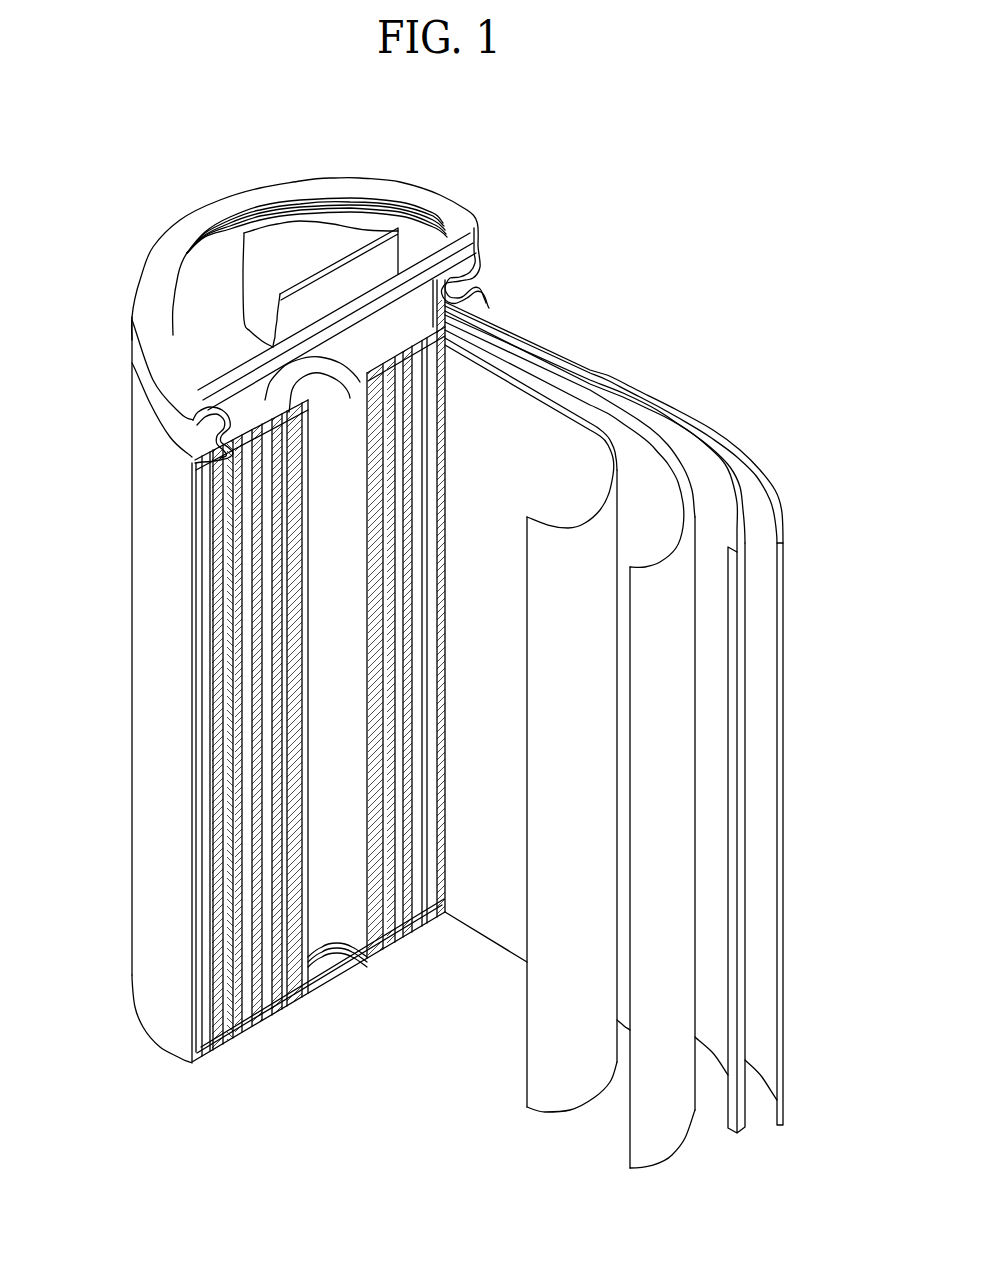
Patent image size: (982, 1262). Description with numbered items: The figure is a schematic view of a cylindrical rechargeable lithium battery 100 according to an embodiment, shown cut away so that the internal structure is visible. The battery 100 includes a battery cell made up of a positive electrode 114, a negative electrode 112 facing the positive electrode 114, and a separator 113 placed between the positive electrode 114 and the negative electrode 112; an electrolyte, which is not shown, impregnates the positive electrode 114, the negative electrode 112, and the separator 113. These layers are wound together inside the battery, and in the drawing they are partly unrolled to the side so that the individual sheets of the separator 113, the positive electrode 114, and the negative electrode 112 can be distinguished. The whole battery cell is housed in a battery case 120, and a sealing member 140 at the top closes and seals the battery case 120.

The rechargeable lithium battery 100 is at (477, 178).
The negative electrode 112 is at (748, 473).
The separator 113 is at (527, 377).
The positive electrode 114 is at (630, 443).
The battery case 120 is at (132, 672).
The sealing member 140 is at (291, 232).